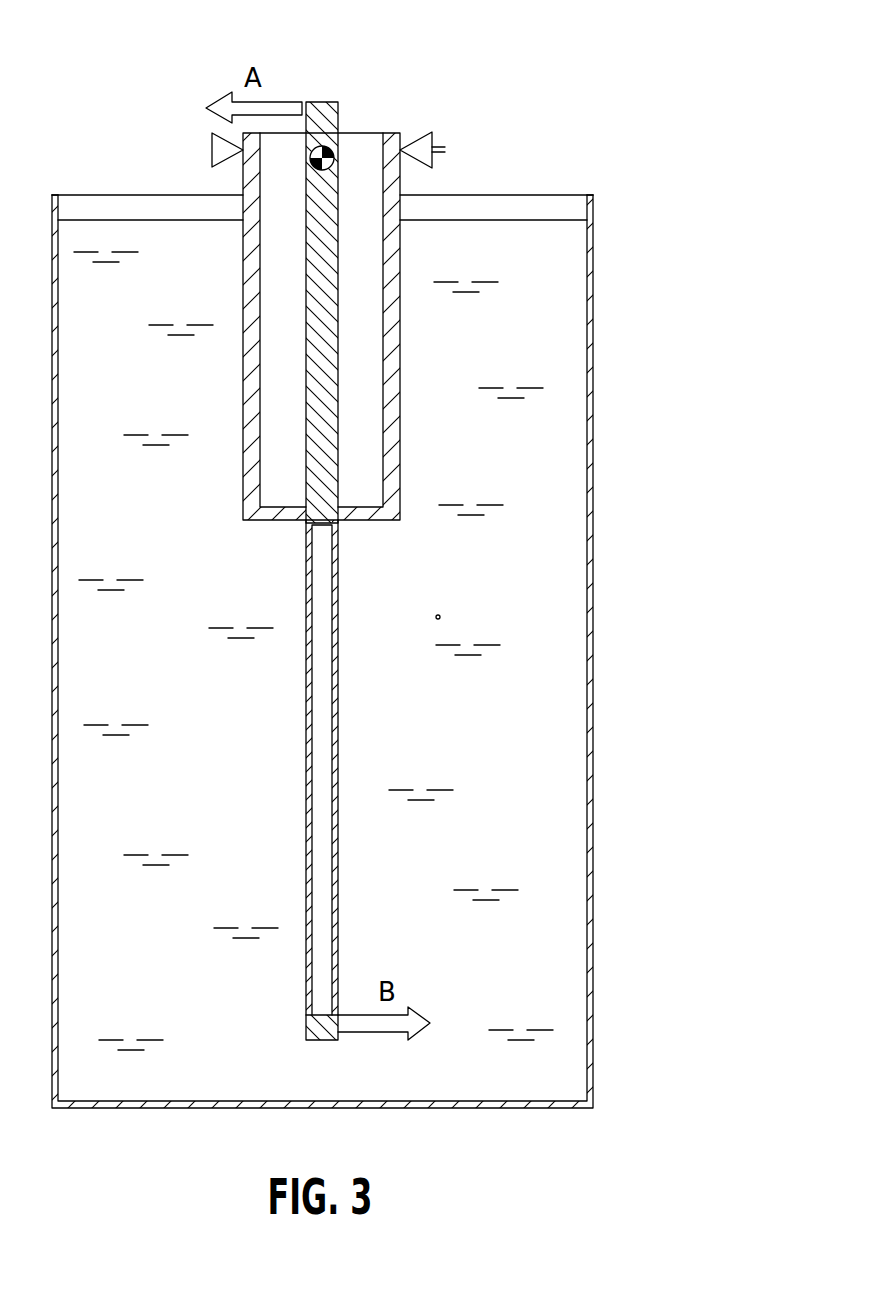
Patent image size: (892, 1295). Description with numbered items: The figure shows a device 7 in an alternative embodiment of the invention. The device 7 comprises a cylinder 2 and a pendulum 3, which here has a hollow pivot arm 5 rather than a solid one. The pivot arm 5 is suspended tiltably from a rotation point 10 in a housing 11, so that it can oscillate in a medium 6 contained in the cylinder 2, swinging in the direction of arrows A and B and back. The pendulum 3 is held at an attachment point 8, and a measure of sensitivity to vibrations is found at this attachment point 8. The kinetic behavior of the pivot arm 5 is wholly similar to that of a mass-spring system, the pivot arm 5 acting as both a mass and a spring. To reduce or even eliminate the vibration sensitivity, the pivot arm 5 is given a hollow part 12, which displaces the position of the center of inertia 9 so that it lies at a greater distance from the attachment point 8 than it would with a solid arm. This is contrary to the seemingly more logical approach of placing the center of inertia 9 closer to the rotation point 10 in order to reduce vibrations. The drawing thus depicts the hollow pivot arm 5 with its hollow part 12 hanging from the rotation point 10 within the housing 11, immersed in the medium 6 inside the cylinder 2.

The cylinder 2 is at (593, 308).
The pendulum 3 is at (430, 358).
The hollow pivot arm 5 is at (338, 740).
The medium 6 is at (440, 615).
The device 7 is at (553, 167).
The attachment point 8 is at (212, 151).
The center of inertia 9 is at (337, 156).
The rotation point 10 is at (337, 500).
The housing 11 is at (255, 289).
The hollow part 12 is at (322, 685).